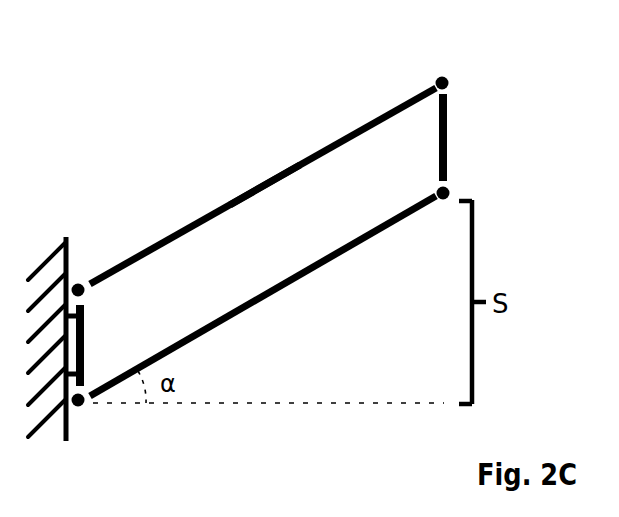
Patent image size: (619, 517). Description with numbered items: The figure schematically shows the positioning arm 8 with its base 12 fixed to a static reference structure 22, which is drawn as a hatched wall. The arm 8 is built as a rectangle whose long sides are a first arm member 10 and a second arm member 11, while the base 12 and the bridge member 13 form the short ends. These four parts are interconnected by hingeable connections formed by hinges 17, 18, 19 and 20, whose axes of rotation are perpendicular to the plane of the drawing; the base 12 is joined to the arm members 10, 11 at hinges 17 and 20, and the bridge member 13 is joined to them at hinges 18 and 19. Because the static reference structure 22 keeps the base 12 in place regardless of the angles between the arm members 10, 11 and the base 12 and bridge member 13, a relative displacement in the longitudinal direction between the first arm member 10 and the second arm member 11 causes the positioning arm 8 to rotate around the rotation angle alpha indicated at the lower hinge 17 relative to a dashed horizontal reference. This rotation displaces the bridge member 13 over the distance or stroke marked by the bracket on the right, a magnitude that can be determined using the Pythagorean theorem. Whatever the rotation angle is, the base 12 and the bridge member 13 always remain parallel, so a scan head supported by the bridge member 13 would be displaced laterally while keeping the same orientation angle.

The positioning arm 8 is at (190, 204).
The first arm member 10 is at (291, 284).
The second arm member 11 is at (268, 176).
The base 12 is at (90, 345).
The bridge member 13 is at (449, 124).
The hinge 17 is at (80, 408).
The hinge 18 is at (441, 202).
The hinge 19 is at (447, 74).
The hinge 20 is at (82, 281).
The static reference structure 22 is at (76, 250).